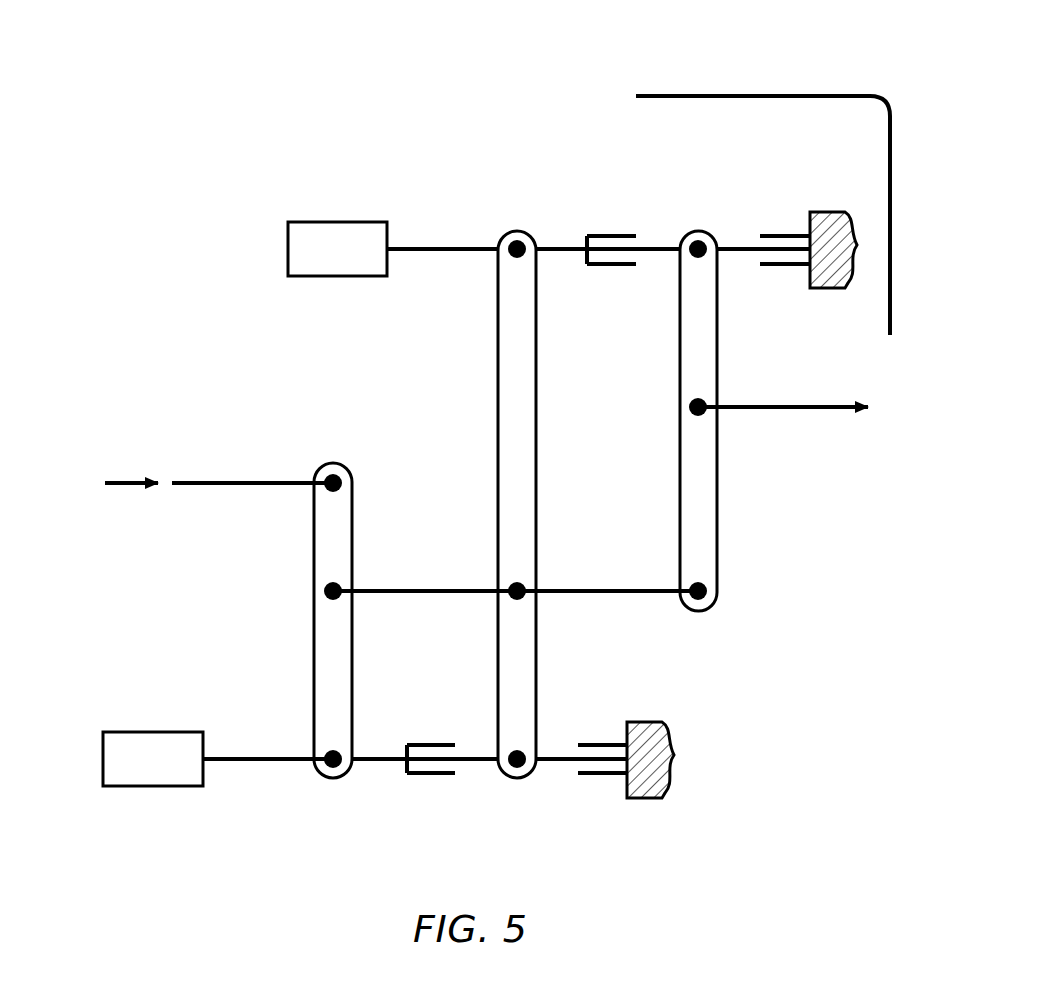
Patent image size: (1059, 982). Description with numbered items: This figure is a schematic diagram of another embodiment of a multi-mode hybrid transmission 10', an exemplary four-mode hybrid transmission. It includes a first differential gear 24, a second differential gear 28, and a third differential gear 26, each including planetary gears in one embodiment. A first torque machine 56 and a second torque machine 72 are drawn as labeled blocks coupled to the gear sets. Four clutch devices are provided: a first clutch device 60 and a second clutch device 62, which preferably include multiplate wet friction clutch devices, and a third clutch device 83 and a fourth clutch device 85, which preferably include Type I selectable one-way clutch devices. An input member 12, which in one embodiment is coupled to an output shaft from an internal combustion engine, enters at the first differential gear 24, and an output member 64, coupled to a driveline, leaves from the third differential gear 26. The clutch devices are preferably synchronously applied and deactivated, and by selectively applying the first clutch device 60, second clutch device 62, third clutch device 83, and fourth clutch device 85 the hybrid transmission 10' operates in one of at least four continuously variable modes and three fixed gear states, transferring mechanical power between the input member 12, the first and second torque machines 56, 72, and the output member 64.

The multi-mode hybrid transmission 10' is at (763, 173).
The input member 12 is at (196, 483).
The first differential gear 24 is at (318, 768).
The third differential gear 26 is at (698, 241).
The second differential gear 28 is at (537, 766).
The first torque machine 56 is at (103, 758).
The first clutch device 60 is at (795, 233).
The second clutch device 62 is at (587, 238).
The output member 64 is at (820, 410).
The second torque machine 72 is at (288, 248).
The third clutch device 83 is at (619, 744).
The fourth clutch device 85 is at (407, 745).